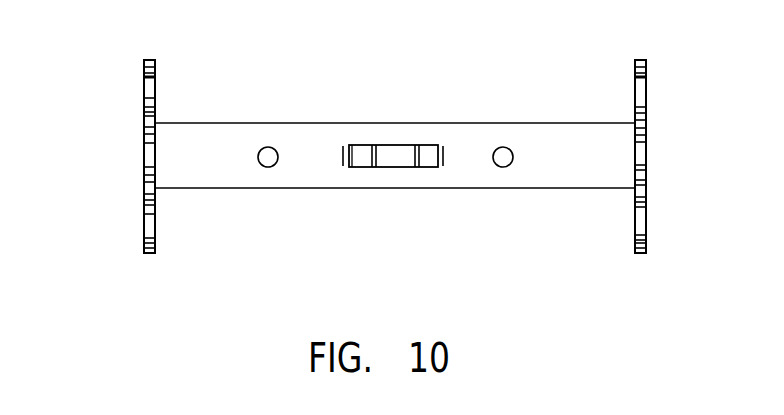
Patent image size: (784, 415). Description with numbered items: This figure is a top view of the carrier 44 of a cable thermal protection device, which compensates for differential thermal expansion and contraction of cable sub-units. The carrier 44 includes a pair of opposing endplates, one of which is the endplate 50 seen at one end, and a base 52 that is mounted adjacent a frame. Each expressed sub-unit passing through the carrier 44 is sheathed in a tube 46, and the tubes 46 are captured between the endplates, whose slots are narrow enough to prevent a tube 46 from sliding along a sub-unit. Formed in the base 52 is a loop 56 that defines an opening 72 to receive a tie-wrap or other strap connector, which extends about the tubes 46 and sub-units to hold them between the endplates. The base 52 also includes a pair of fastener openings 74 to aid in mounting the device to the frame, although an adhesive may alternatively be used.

The carrier 44 is at (290, 101).
The tube 46 is at (145, 136).
The endplate 50 is at (645, 139).
The base 52 is at (213, 172).
The loop 56 is at (393, 157).
The opening 72 is at (503, 159).
The fastener opening 74 is at (265, 159).